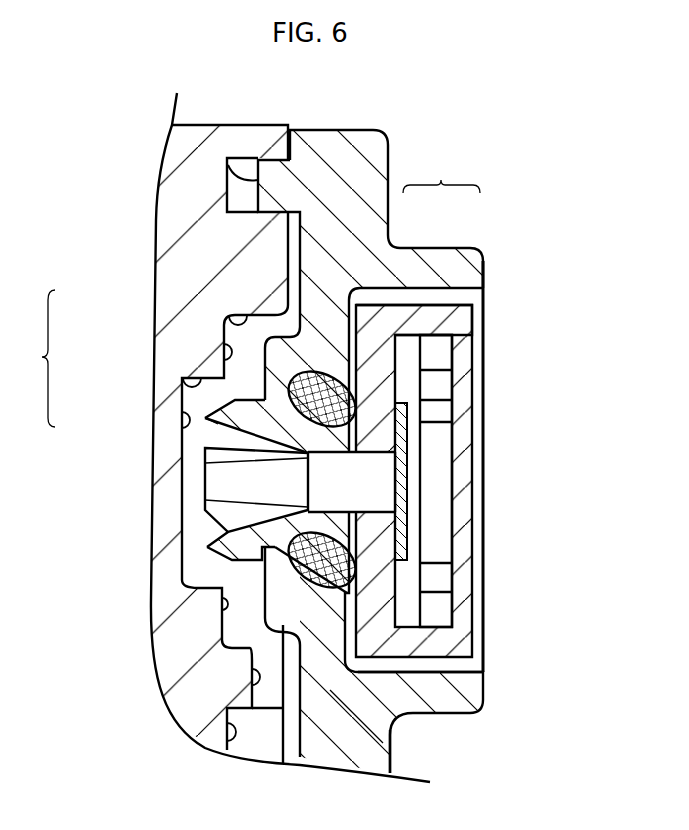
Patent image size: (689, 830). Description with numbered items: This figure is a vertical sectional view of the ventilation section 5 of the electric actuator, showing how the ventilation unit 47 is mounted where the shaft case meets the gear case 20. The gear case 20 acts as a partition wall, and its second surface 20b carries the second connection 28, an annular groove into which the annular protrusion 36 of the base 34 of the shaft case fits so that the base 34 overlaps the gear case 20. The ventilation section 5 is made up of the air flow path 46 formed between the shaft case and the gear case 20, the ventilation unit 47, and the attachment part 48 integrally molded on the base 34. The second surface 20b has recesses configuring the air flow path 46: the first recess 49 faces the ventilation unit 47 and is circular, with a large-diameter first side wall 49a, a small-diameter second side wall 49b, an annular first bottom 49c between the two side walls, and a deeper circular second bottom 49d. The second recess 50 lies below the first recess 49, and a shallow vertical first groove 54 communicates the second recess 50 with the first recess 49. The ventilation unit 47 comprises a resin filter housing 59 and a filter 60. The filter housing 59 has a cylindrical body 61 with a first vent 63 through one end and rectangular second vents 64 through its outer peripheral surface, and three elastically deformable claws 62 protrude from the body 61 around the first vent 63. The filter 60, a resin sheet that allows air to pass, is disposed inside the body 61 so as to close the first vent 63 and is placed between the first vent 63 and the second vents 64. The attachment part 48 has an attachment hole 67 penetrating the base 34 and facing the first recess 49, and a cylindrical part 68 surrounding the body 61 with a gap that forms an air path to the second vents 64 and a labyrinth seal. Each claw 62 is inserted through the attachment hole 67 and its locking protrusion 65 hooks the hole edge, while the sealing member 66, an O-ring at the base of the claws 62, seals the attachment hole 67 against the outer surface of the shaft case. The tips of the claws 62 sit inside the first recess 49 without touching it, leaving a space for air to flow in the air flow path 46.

The ventilation section 5 is at (461, 405).
The gear case 20 is at (185, 253).
The second surface 20b is at (302, 240).
The second connection 28 is at (230, 188).
The base 34 is at (372, 745).
The annular protrusion 36 is at (250, 178).
The air flow path 46 is at (240, 616).
The ventilation unit 47 is at (489, 322).
The attachment part 48 is at (510, 254).
The first recess 49 is at (132, 359).
The first side wall 49a is at (230, 315).
The second side wall 49b is at (190, 378).
The first bottom 49c is at (226, 352).
The second bottom 49d is at (184, 420).
The second recess 50 is at (228, 748).
The first groove 54 is at (255, 680).
The filter housing 59 is at (441, 173).
The filter 60 is at (405, 440).
The body 61 is at (433, 312).
The claw 62 is at (327, 438).
The first vent 63 is at (316, 488).
The second vent 64 is at (440, 350).
The locking protrusion 65 is at (285, 400).
The sealing member 66 is at (325, 575).
The attachment hole 67 is at (212, 420).
The cylindrical part 68 is at (450, 695).